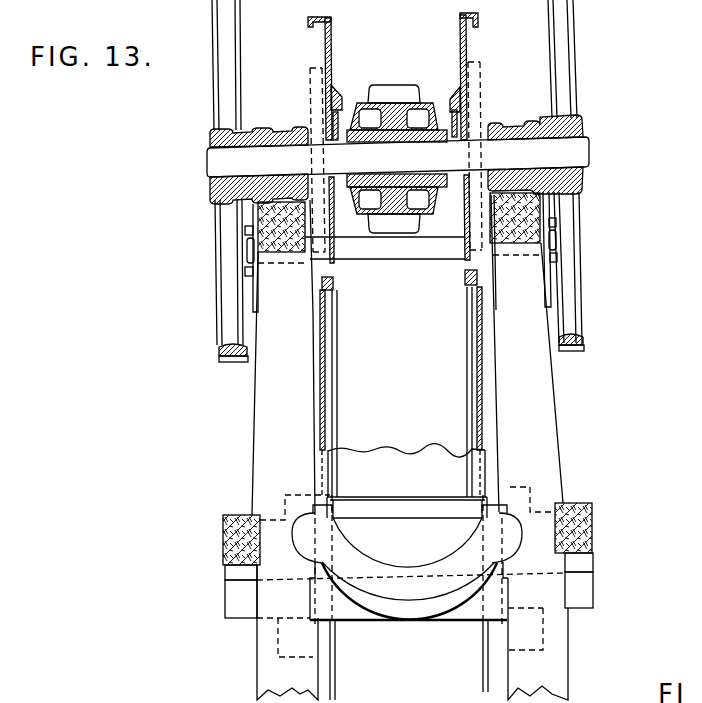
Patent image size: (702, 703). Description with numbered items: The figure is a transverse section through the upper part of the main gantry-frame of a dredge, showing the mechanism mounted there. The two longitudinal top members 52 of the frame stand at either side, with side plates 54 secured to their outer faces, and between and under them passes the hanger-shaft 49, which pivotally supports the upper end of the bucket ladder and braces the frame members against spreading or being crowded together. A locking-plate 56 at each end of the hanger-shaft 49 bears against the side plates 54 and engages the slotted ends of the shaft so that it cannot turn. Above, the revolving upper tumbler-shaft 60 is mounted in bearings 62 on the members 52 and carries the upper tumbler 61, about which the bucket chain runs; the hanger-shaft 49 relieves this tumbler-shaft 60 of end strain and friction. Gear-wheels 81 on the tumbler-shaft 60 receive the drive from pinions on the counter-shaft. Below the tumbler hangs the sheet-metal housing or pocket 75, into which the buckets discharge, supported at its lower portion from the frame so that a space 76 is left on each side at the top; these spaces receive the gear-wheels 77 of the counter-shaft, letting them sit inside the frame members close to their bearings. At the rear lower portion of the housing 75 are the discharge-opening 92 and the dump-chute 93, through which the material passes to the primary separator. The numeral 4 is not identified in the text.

The frame column 4 is at (250, 478).
The hanger-shaft 49 is at (258, 252).
The longitudinal top members 52 is at (292, 248).
The side plates 54 is at (257, 295).
The locking-plate 56 is at (265, 239).
The upper tumbler-shaft 60 is at (589, 152).
The upper tumbler 61 is at (402, 85).
The bearings 62 is at (272, 131).
The housing or pocket 75 is at (328, 327).
The space 76 is at (327, 273).
The gear-wheels 77 is at (310, 66).
The gear-wheels 81 is at (240, 29).
The discharge-opening 92 is at (387, 553).
The dump-chute 93 is at (427, 590).